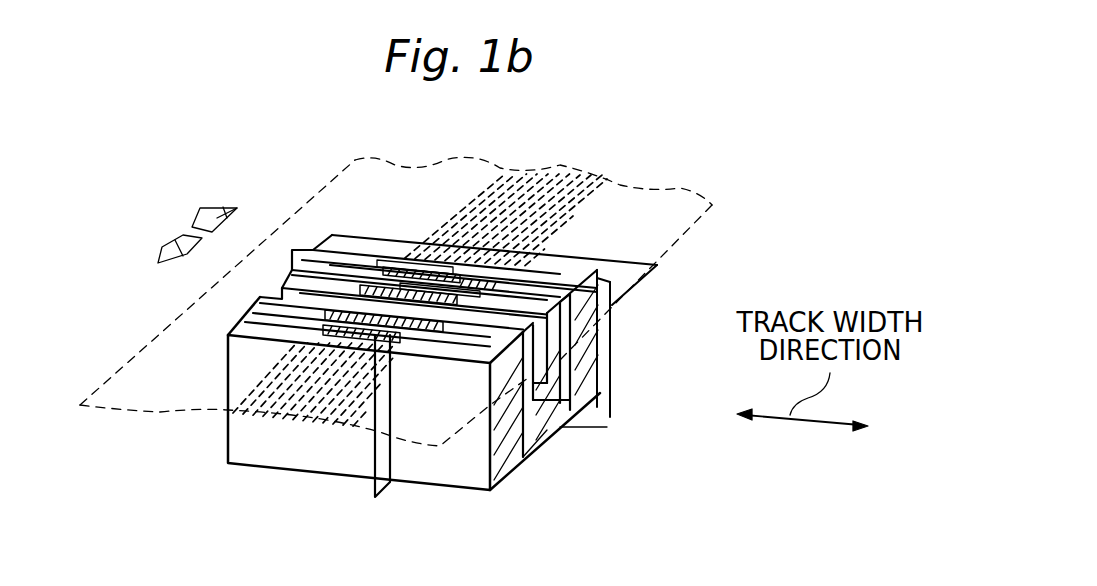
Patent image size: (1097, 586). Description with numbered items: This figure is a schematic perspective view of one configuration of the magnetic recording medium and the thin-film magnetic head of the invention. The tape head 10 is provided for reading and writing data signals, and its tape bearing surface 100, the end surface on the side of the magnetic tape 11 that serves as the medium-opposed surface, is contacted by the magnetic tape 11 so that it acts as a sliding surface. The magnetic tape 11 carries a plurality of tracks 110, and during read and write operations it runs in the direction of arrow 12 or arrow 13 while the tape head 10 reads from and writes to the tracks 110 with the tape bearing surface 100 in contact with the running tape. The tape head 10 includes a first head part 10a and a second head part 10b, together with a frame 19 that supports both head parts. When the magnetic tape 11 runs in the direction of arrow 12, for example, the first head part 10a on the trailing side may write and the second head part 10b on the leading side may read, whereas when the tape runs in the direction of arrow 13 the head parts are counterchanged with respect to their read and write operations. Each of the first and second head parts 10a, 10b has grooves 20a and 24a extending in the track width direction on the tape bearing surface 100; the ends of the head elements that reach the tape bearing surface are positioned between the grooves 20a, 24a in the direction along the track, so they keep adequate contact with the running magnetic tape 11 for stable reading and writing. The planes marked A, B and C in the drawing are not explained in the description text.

The magnetic tape 11 is at (700, 178).
The tracks 110 is at (615, 170).
The tape bearing surface (TBS) 100 is at (353, 287).
The groove 24a is at (366, 293).
The groove 20a is at (385, 285).
The arrow 12 is at (176, 242).
The arrow 13 is at (222, 206).
The tape head 10 is at (636, 397).
The first head part 10a is at (560, 385).
The second head part 10b is at (530, 413).
The frame 19 is at (522, 457).
The plane A is at (386, 458).
The plane B is at (603, 347).
The plane C is at (657, 265).